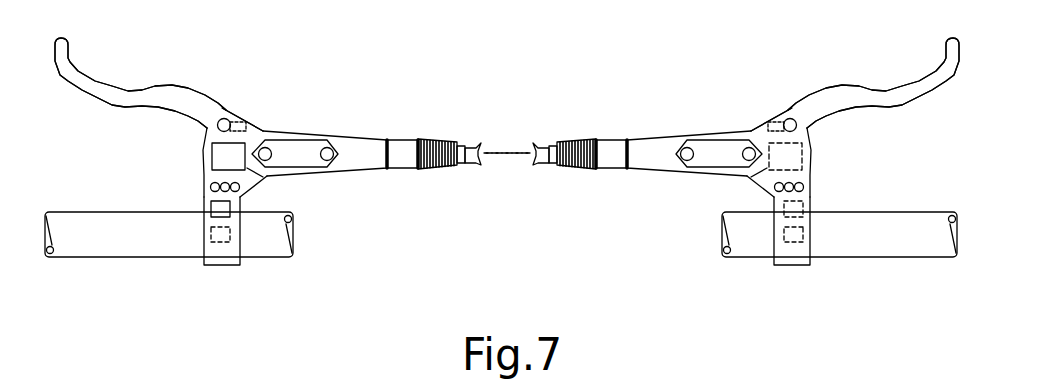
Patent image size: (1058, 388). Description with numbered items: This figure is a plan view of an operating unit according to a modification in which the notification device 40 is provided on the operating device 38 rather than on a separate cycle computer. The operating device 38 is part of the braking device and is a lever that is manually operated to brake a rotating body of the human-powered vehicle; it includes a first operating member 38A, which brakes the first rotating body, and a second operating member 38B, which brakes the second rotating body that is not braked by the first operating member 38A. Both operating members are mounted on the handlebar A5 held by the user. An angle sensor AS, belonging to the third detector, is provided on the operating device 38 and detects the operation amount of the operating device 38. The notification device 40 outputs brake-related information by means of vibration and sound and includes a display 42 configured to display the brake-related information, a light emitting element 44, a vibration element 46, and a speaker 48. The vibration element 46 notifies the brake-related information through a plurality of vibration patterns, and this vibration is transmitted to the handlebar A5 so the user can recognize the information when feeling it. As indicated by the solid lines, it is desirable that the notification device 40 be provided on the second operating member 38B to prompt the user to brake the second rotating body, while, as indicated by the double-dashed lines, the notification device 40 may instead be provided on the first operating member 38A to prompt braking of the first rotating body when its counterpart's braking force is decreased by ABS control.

The operating device 38 is at (500, 114).
The first operating member 38A is at (925, 97).
The second operating member 38B is at (70, 85).
The notification device 40 is at (189, 144).
The display 42 is at (212, 157).
The light emitting element 44 is at (233, 183).
The vibration element 46 is at (222, 242).
The speaker 48 is at (205, 212).
The handlebar A5 is at (115, 258).
The angle sensor AS is at (248, 125).